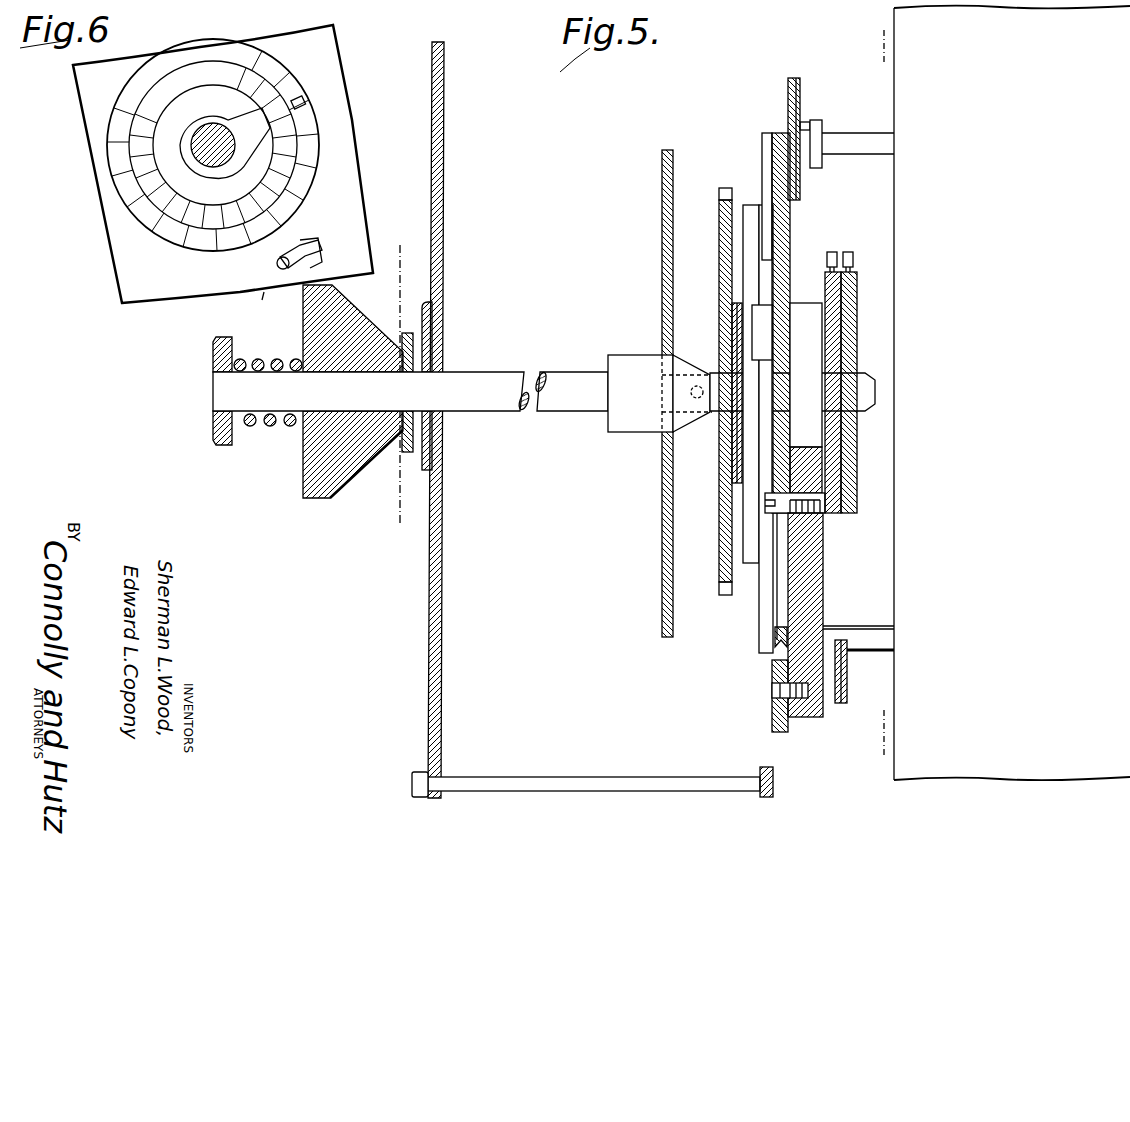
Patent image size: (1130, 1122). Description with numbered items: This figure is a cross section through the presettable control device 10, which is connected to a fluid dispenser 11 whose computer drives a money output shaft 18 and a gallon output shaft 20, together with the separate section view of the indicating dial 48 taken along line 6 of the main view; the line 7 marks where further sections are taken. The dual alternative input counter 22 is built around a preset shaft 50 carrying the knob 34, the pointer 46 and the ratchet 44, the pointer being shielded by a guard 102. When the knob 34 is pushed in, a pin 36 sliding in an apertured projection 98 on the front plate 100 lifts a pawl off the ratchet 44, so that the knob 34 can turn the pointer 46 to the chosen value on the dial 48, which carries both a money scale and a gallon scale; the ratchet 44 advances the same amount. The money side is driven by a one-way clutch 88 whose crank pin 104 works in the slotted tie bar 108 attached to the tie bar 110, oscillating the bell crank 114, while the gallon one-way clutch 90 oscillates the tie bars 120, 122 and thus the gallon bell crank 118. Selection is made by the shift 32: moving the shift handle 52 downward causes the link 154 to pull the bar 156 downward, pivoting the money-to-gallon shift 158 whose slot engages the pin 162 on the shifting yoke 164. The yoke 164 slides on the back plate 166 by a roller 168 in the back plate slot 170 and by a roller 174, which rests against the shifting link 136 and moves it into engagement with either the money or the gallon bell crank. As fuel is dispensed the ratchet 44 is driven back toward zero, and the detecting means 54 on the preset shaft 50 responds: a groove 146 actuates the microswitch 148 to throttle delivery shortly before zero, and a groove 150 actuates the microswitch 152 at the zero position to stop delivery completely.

In FIG. 5, the section line 6— 6 is at (426, 231).
In FIG. 5, the section line 7— 7 is at (847, 17).
In FIG. 5, the presettable control device 10 is at (422, 573).
In FIG. 6, the fluid dispenser 11 is at (152, 292).
In FIG. 5, the fluid dispenser 11 is at (431, 100).
In FIG. 5, the money output shaft 18 is at (863, 134).
In FIG. 5, the gallon output shaft 20 is at (865, 643).
In FIG. 5, the dual alternative input counter 22 is at (611, 342).
In FIG. 5, the shift 32 is at (800, 719).
In FIG. 5, the knob 34 is at (222, 452).
In FIG. 5, the pin 36 is at (660, 432).
In FIG. 5, the ratchet 44 is at (719, 518).
In FIG. 6, the pointer 46 is at (266, 114).
In FIG. 5, the pointer 46 is at (403, 434).
In FIG. 6, the indicating dial 48 is at (108, 150).
In FIG. 5, the indicating dial 48 is at (424, 306).
In FIG. 6, the preset shaft 50 is at (228, 170).
In FIG. 5, the preset shaft 50 is at (544, 413).
In FIG. 6, the shift handle 52 is at (278, 262).
In FIG. 5, the shift handle 52 is at (420, 772).
In FIG. 5, the detecting means 54 is at (866, 272).
In FIG. 5, the one-way clutch 88 is at (818, 120).
In FIG. 5, the gallon one-way clutch 90 is at (846, 664).
In FIG. 5, the apertured projection 98 is at (697, 386).
In FIG. 5, the front plate 100 is at (662, 556).
In FIG. 5, the guard 102 is at (303, 486).
In FIG. 5, the crank pin 104 is at (806, 122).
In FIG. 5, the tie bar 108 is at (798, 80).
In FIG. 5, the tie bar 110 is at (788, 85).
In FIG. 5, the bell crank 114 is at (765, 166).
In FIG. 5, the gallon bell crank 118 is at (765, 620).
In FIG. 5, the tie bar 120 is at (843, 700).
In FIG. 5, the tie bar 122 is at (842, 640).
In FIG. 5, the shifting link 136 is at (748, 218).
In FIG. 5, the groove 146 is at (782, 298).
In FIG. 5, the microswitch 148 is at (833, 252).
In FIG. 5, the groove 150 is at (853, 290).
In FIG. 5, the microswitch 152 is at (853, 258).
In FIG. 6, the link 154 is at (262, 296).
In FIG. 5, the link 154 is at (597, 786).
In FIG. 5, the bar 156 is at (760, 770).
In FIG. 5, the money-to-gallon shift 158 is at (772, 712).
In FIG. 5, the pin 162 is at (772, 693).
In FIG. 5, the shifting yoke 164 is at (810, 313).
In FIG. 5, the back plate 166 is at (776, 148).
In FIG. 5, the roller 168 is at (823, 546).
In FIG. 5, the back plate slot 170 is at (777, 597).
In FIG. 5, the roller 174 is at (763, 312).